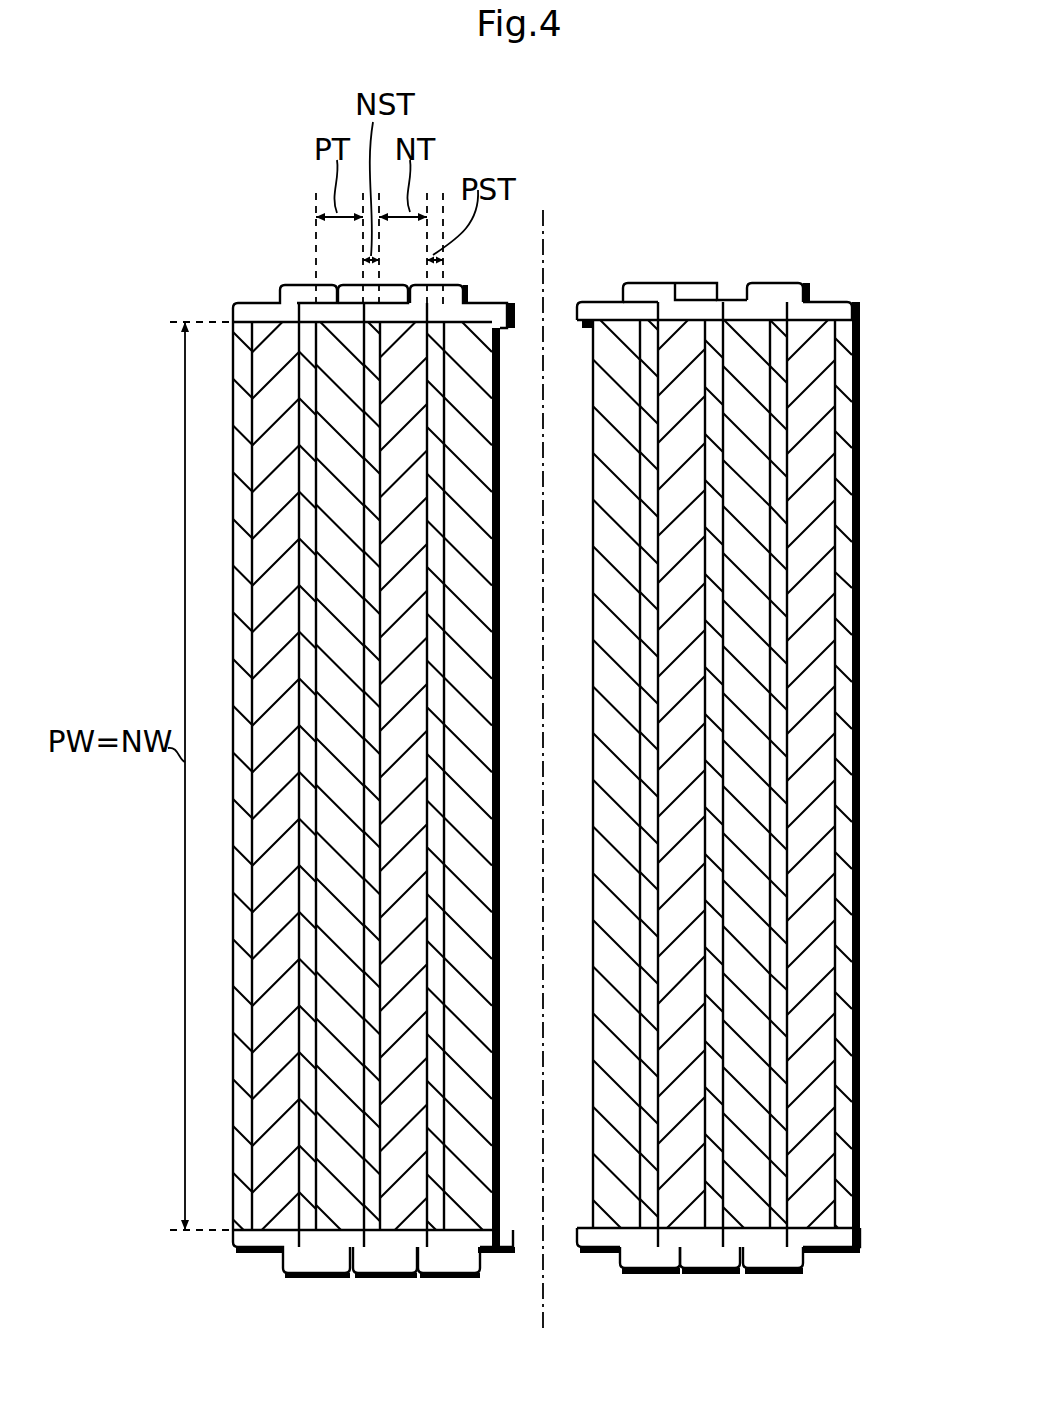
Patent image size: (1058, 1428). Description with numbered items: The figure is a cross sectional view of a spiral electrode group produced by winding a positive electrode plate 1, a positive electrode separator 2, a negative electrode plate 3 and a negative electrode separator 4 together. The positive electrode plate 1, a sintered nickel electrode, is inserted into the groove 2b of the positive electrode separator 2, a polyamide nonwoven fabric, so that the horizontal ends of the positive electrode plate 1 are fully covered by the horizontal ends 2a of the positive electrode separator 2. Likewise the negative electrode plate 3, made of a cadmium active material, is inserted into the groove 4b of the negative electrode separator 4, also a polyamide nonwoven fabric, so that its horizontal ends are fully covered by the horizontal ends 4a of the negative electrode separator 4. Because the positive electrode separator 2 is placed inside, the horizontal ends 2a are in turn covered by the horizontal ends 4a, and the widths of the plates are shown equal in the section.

The positive electrode plate 1 is at (482, 1183).
The positive electrode separator 2 is at (487, 1270).
The negative electrode plate 3 is at (405, 1187).
The negative electrode separator 4 is at (437, 1273).
The horizontal ends of the positive electrode separator 2a is at (719, 1282).
The horizontal ends of the negative electrode separator 4a is at (788, 1282).
The groove of the positive electrode separator 2b is at (765, 779).
The groove of the negative electrode separator 4b is at (815, 658).